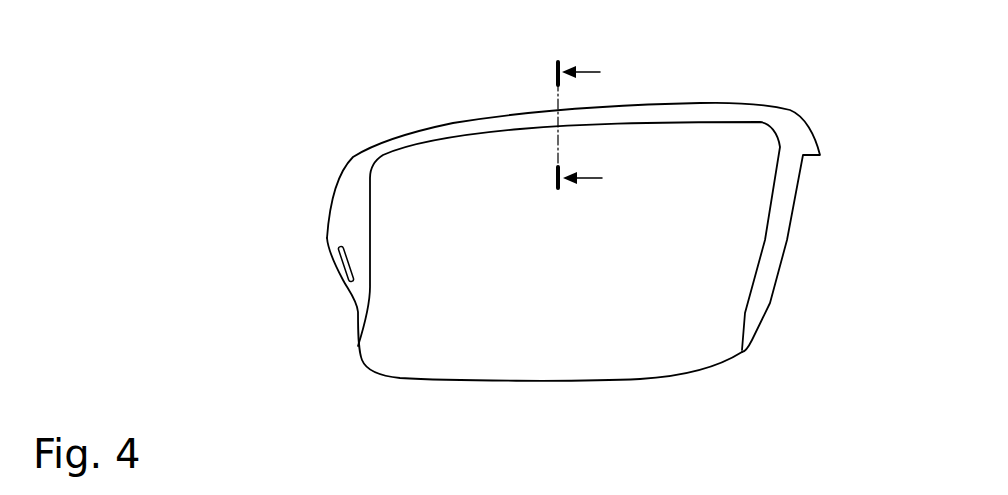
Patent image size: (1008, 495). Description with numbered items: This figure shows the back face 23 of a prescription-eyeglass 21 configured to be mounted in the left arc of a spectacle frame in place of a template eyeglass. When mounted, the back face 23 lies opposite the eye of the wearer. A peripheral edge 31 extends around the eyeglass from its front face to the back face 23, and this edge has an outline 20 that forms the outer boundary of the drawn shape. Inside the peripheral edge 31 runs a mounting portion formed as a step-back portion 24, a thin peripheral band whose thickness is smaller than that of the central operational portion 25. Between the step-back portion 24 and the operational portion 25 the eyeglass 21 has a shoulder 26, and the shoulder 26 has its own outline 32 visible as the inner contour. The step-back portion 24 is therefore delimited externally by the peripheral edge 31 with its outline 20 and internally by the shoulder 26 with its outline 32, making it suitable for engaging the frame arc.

The outline 20 is at (737, 358).
The prescription-eyeglass 21 is at (261, 180).
The back face 23 is at (560, 286).
The step-back portion 24 is at (320, 239).
The operational portion 25 is at (423, 253).
The shoulder 26 is at (491, 128).
The peripheral edge 31 is at (669, 90).
The outline 32 is at (727, 123).